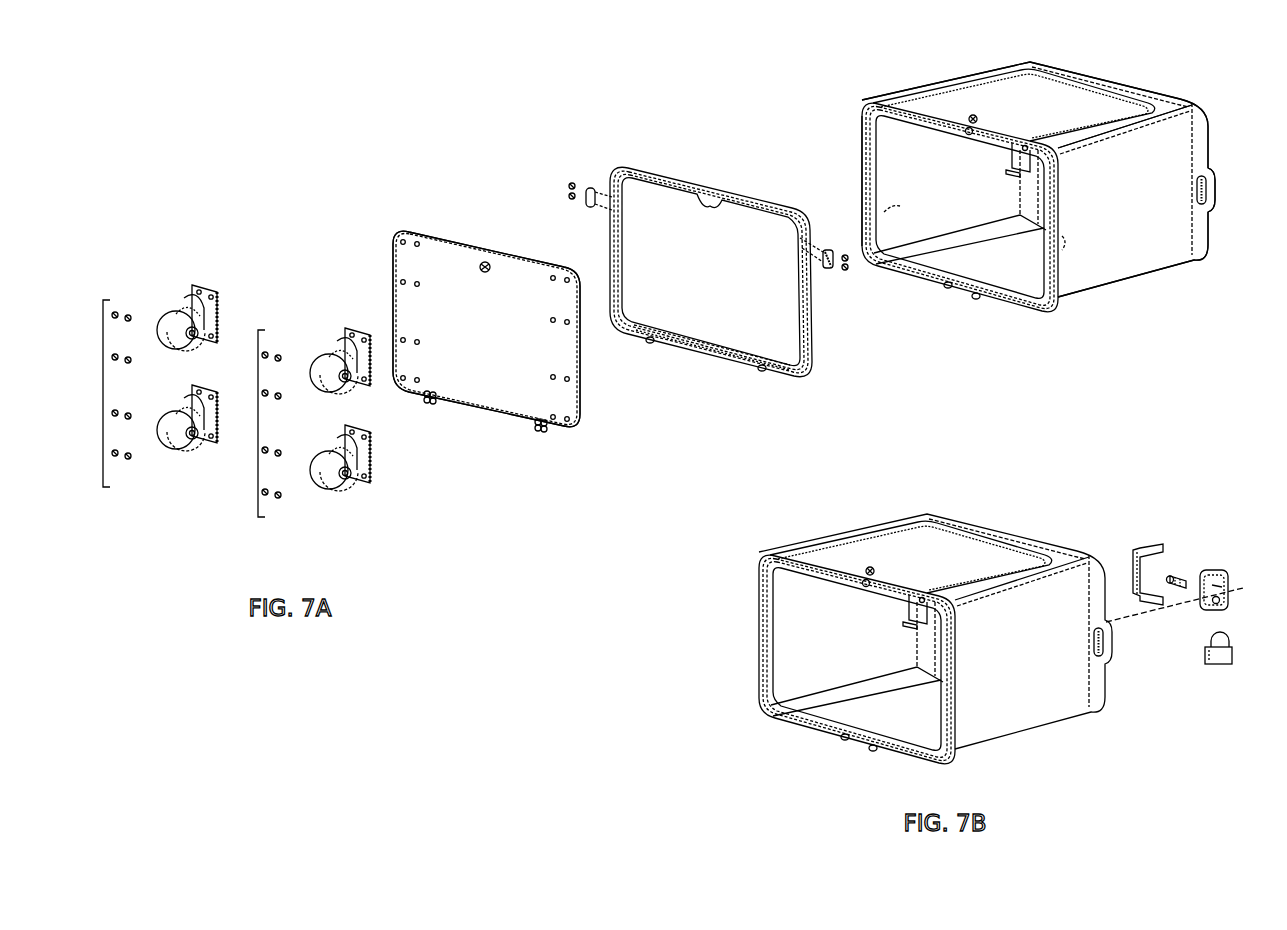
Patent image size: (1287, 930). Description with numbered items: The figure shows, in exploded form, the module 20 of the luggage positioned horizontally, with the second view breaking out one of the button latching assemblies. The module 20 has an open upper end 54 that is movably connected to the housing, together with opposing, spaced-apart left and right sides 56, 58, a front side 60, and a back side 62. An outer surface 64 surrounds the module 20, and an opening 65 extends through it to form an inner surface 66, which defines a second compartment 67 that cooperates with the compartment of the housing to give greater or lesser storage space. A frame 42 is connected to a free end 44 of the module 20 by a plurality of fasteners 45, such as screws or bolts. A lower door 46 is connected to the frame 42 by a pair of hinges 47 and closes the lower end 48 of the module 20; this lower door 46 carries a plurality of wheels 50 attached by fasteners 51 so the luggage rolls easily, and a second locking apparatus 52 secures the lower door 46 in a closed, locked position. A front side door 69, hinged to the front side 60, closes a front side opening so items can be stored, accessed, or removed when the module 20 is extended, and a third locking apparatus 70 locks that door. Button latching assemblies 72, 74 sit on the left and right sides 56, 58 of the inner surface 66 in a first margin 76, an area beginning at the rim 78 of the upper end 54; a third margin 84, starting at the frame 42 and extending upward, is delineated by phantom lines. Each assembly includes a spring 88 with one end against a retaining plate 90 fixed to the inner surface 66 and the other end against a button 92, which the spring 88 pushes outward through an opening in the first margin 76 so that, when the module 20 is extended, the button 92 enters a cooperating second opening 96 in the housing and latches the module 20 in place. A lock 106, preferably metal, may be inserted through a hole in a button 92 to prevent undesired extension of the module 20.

In FIG. 7A, the module 20 is at (1118, 290).
In FIG. 7B, the module 20 is at (1022, 706).
In FIG. 7A, the frame 42 is at (812, 340).
In FIG. 7A, the free end 44 is at (1052, 330).
In FIG. 7A, the fasteners 45 is at (563, 171).
In FIG. 7A, the lower door 46 is at (496, 402).
In FIG. 7A, the hinges 47 is at (430, 405).
In FIG. 7A, the lower end 48 is at (410, 255).
In FIG. 7A, the wheels 50 is at (205, 283).
In FIG. 7A, the fasteners 51 is at (103, 393).
In FIG. 7A, the second locking apparatus 52 is at (483, 255).
In FIG. 7A, the open upper end 54 is at (1050, 75).
In FIG. 7A, the left side 56 is at (1118, 193).
In FIG. 7A, the right side 58 is at (952, 176).
In FIG. 7A, the front side 60 is at (1028, 62).
In FIG. 7A, the back side 62 is at (973, 258).
In FIG. 7A, the outer surface 64 is at (1185, 283).
In FIG. 7A, the opening 65 is at (1030, 316).
In FIG. 7A, the inner surface 66 is at (905, 140).
In FIG. 7A, the second compartment 67 is at (914, 288).
In FIG. 7A, the front side door 69 is at (985, 90).
In FIG. 7A, the third locking apparatus 70 is at (980, 118).
In FIG. 7B, the button latching assembly 72 is at (1128, 477).
In FIG. 7A, the button latching assembly 74 is at (1025, 160).
In FIG. 7B, the button latching assembly 74 is at (926, 614).
In FIG. 7A, the first margin 76 is at (1185, 100).
In FIG. 7A, the rim 78 is at (1216, 248).
In FIG. 7A, the third margin 84 is at (890, 214).
In FIG. 7B, the spring 88 is at (1178, 572).
In FIG. 7B, the retaining plate 90 is at (1145, 545).
In FIG. 7B, the button 92 is at (1214, 568).
In FIG. 7B, the second opening 96 is at (1090, 646).
In FIG. 7B, the lock 106 is at (1218, 666).